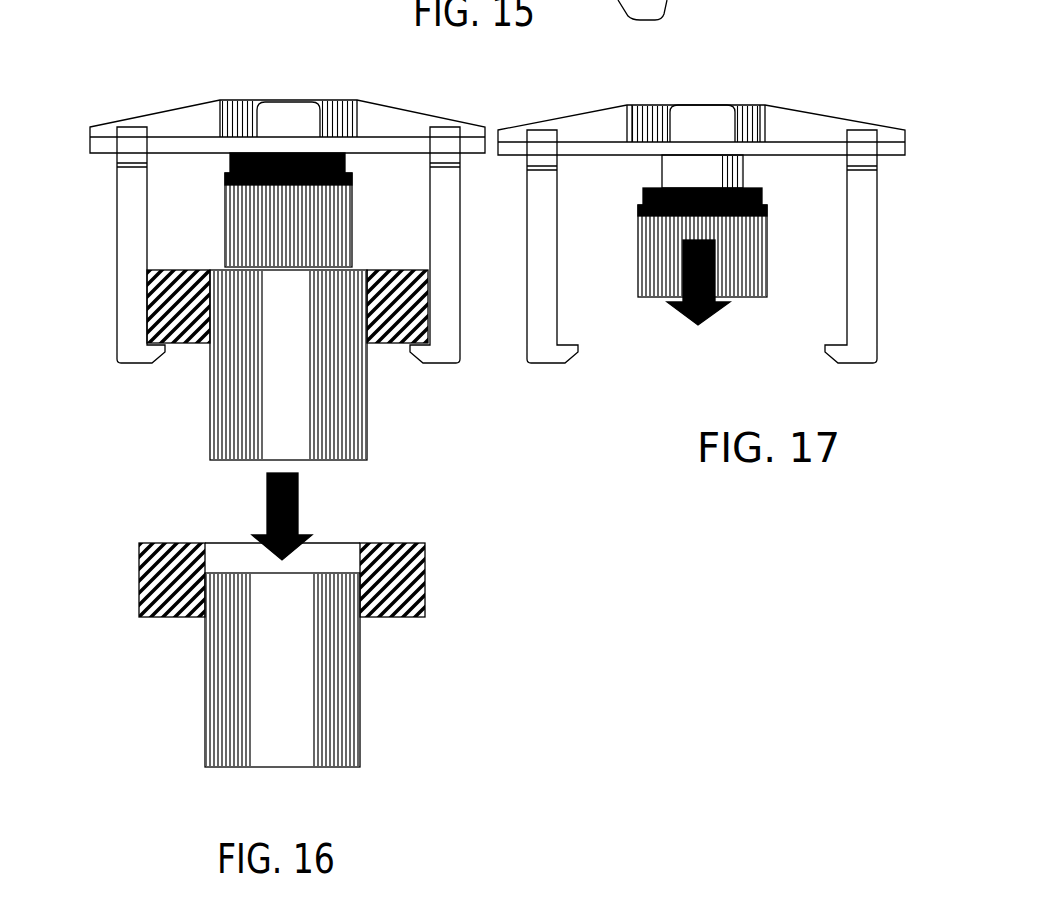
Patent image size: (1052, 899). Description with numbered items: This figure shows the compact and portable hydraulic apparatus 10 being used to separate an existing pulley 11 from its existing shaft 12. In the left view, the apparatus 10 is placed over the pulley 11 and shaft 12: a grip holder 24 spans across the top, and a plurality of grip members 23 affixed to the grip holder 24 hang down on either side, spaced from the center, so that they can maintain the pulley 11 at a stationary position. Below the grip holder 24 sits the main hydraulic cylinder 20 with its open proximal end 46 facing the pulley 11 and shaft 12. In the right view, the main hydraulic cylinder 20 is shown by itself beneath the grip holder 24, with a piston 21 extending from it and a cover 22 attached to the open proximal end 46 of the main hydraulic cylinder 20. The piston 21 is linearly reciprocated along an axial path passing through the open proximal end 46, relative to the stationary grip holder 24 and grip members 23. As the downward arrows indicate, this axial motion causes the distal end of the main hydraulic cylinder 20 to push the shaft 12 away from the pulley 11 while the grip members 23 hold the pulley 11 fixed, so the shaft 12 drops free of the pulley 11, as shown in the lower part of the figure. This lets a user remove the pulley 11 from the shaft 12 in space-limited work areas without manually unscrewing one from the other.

In FIG. 16, the hydraulic apparatus 10 is at (271, 192).
In FIG. 17, the hydraulic apparatus 10 is at (701, 181).
In FIG. 16, the pulley 11 is at (175, 283).
In FIG. 16, the shaft 12 is at (305, 386).
In FIG. 17, the main hydraulic cylinder 20 is at (775, 255).
In FIG. 17, the piston 21 is at (735, 175).
In FIG. 17, the cover 22 is at (645, 192).
In FIG. 16, the grip members 23 is at (120, 242).
In FIG. 16, the grip holder 24 is at (205, 88).
In FIG. 17, the grip holder 24 is at (775, 95).
In FIG. 16, the open proximal end 46 is at (322, 157).